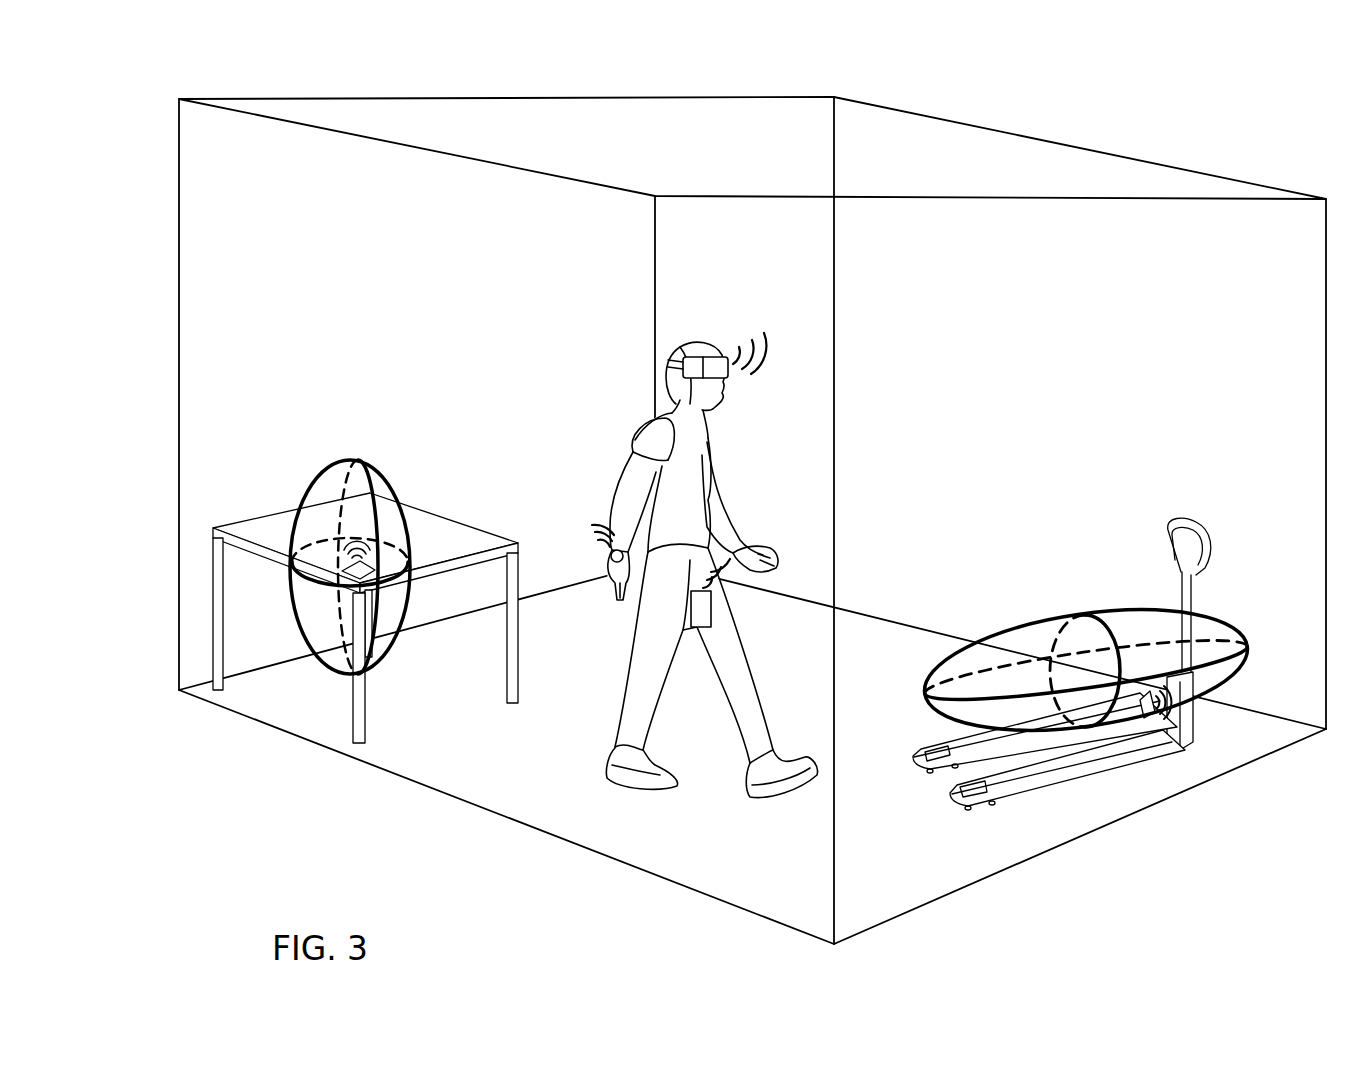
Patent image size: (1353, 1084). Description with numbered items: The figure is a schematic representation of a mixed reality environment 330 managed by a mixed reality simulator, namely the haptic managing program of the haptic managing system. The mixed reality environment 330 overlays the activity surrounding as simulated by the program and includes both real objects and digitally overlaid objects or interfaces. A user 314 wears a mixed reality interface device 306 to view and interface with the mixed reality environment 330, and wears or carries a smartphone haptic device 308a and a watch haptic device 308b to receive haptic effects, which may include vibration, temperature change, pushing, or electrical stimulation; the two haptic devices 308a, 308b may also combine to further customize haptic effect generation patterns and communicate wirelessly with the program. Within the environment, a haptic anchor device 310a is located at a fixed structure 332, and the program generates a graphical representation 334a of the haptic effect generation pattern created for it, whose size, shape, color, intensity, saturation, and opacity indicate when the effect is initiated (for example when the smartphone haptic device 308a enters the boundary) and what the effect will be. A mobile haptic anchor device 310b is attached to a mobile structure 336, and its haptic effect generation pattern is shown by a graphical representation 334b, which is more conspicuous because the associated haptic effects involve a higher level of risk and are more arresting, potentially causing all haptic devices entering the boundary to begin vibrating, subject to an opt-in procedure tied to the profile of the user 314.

The mixed reality environment 330 is at (352, 180).
The mixed reality interface device 306 is at (725, 362).
The user 314 is at (687, 463).
The smartphone haptic device 308a is at (705, 608).
The watch haptic device 308b is at (610, 553).
The haptic anchor device 310a is at (345, 560).
The mobile haptic anchor device 310b is at (1147, 717).
The fixed structure 332 is at (440, 530).
The graphical representation 334a is at (330, 468).
The graphical representation 334b is at (1080, 615).
The mobile structure 336 is at (1035, 793).